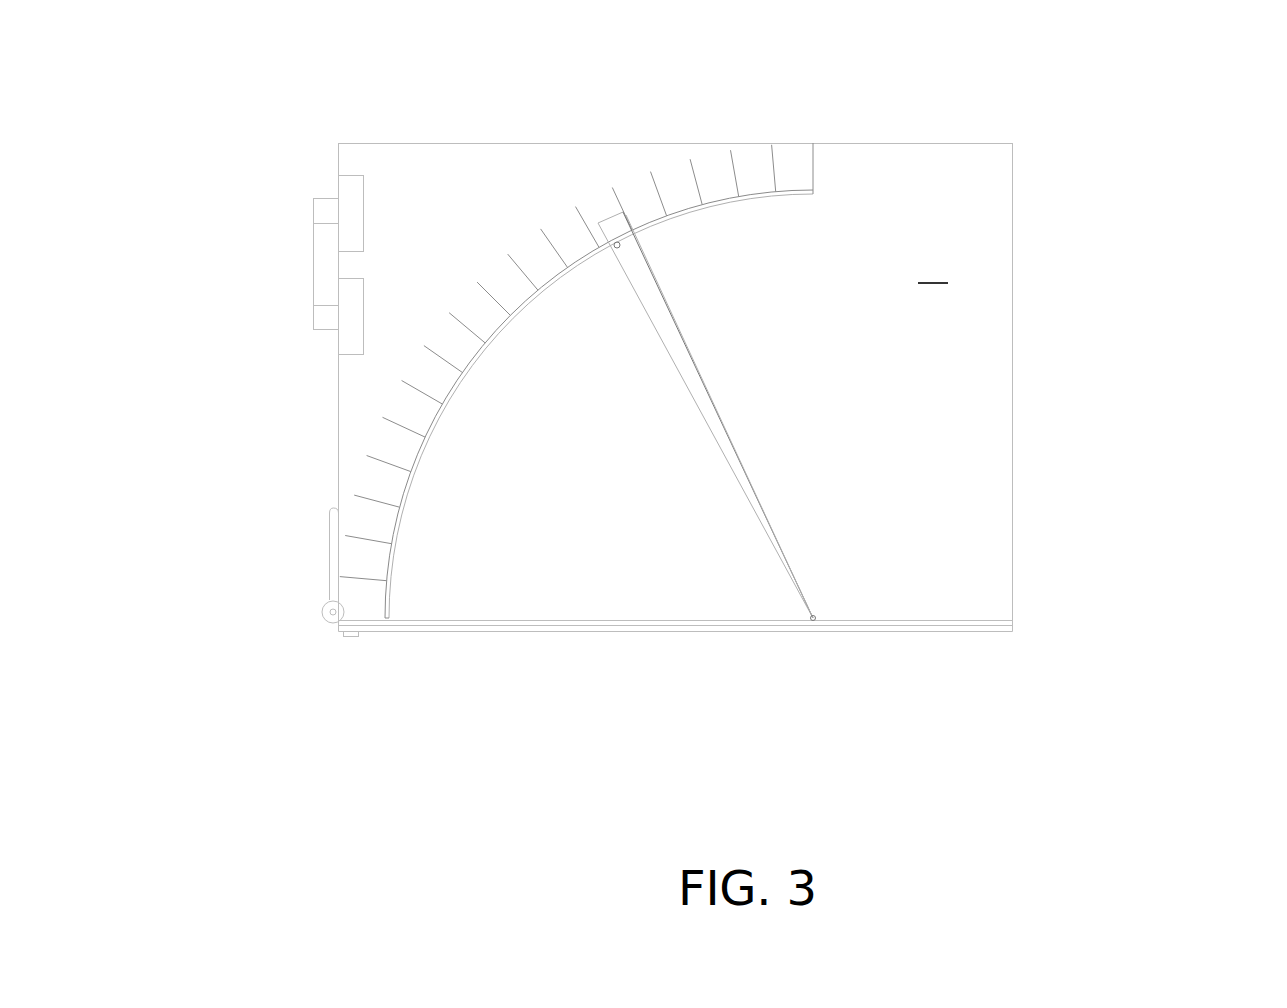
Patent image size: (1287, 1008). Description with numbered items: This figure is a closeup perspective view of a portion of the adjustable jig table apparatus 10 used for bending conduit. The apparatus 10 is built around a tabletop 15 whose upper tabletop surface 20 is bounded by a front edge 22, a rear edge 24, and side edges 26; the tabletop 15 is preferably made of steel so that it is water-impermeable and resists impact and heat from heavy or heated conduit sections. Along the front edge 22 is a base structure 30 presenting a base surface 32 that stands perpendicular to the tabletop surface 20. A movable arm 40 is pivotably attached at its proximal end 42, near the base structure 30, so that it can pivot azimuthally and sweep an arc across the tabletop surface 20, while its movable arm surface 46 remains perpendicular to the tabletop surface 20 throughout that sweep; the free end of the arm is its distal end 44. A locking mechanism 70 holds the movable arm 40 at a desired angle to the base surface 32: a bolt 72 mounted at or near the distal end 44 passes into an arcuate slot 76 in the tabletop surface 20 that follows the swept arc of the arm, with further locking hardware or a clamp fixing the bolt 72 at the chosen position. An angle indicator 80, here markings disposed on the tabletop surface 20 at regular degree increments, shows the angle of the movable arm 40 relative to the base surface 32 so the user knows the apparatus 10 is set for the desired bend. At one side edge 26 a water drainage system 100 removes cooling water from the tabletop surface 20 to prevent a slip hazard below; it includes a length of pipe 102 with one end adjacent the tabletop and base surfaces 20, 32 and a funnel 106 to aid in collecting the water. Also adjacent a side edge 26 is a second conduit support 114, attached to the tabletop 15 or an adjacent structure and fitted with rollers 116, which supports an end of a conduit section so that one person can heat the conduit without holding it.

The adjustable jig table apparatus 10 is at (702, 360).
The tabletop 15 is at (1012, 182).
The tabletop surface 20 is at (933, 270).
The front edge 22 is at (718, 613).
The rear edge 24 is at (873, 142).
The side edge 26 is at (338, 432).
The base structure 30 is at (473, 620).
The base surface 32 is at (958, 620).
The movable arm 40 is at (724, 338).
The proximal end 42 is at (815, 618).
The distal end 44 is at (673, 336).
The movable arm surface 46 is at (703, 382).
The locking mechanism 70 is at (582, 315).
The bolt 72 is at (615, 248).
The slot 76 is at (453, 395).
The angle indicator 80 is at (428, 172).
The water drainage system 100 is at (244, 593).
The pipe 102 is at (330, 534).
The funnel 106 is at (323, 617).
The second conduit support 114 is at (313, 235).
The rollers 116 is at (262, 221).